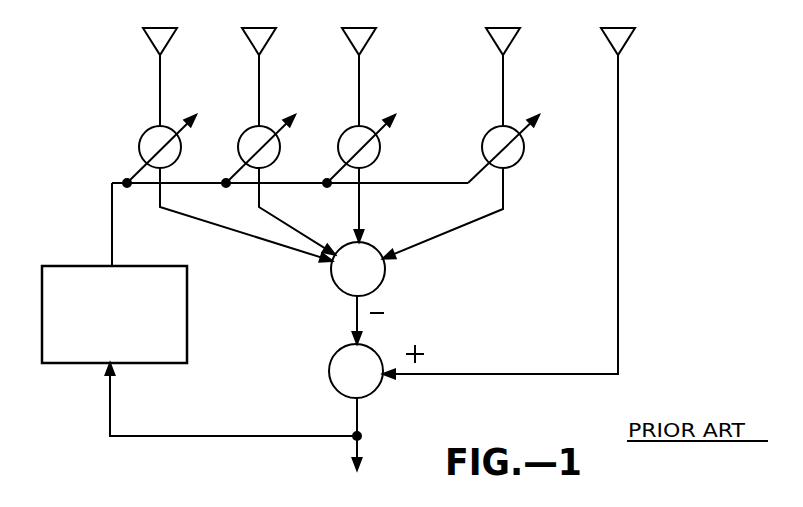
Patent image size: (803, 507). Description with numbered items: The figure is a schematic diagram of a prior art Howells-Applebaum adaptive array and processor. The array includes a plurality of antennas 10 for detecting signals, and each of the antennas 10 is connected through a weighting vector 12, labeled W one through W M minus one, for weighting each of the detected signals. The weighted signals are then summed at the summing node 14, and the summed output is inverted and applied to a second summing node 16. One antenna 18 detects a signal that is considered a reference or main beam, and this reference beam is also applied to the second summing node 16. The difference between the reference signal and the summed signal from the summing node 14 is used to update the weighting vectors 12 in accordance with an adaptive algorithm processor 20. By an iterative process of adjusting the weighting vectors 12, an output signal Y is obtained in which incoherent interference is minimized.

The antennas 10 is at (242, 37).
The weighting vector 12 is at (148, 136).
The summing node 14 is at (377, 272).
The second summing node 16 is at (368, 355).
The antenna 18 is at (624, 34).
The adaptive algorithm processor 20 is at (83, 266).